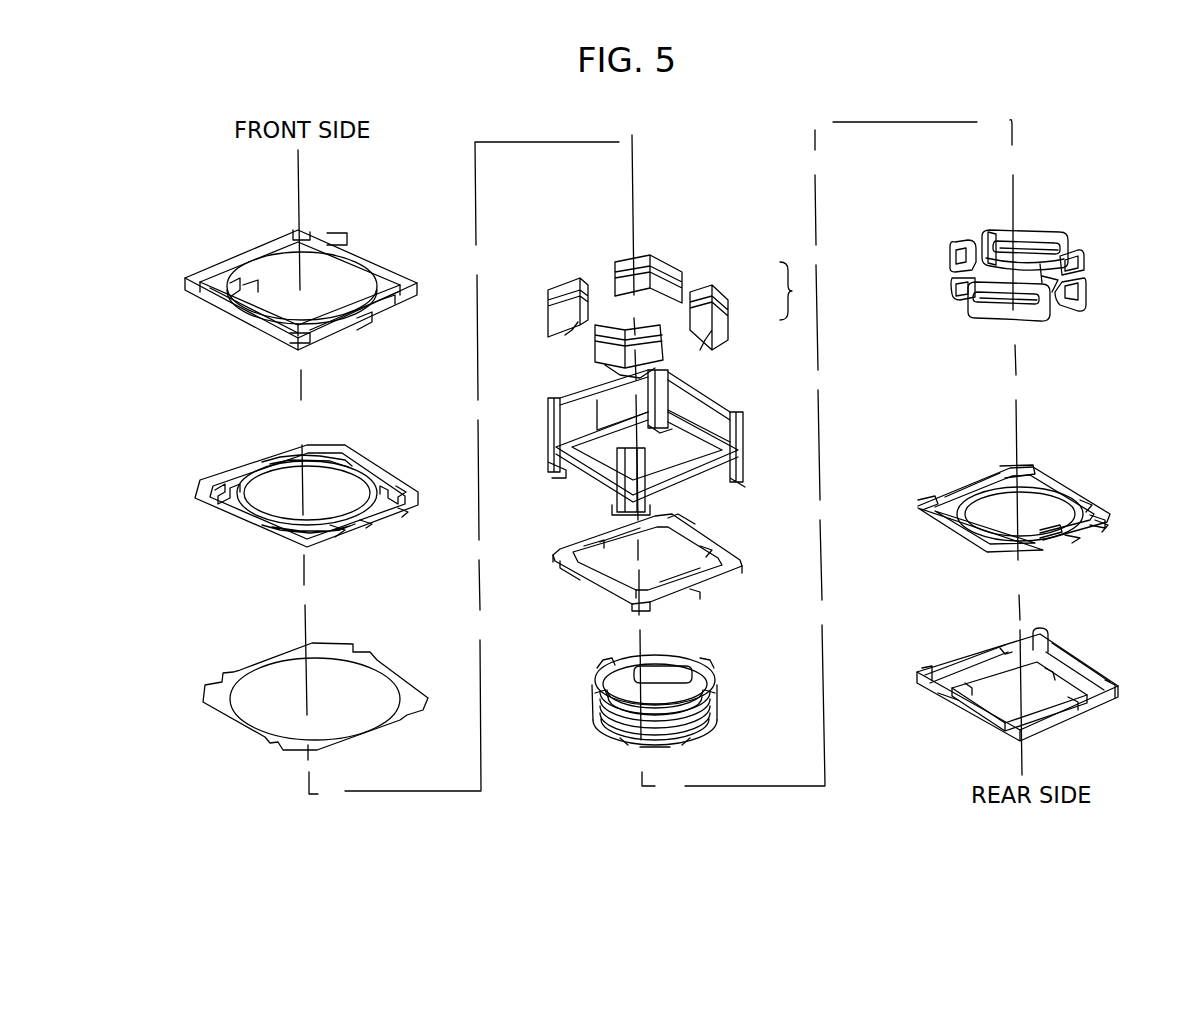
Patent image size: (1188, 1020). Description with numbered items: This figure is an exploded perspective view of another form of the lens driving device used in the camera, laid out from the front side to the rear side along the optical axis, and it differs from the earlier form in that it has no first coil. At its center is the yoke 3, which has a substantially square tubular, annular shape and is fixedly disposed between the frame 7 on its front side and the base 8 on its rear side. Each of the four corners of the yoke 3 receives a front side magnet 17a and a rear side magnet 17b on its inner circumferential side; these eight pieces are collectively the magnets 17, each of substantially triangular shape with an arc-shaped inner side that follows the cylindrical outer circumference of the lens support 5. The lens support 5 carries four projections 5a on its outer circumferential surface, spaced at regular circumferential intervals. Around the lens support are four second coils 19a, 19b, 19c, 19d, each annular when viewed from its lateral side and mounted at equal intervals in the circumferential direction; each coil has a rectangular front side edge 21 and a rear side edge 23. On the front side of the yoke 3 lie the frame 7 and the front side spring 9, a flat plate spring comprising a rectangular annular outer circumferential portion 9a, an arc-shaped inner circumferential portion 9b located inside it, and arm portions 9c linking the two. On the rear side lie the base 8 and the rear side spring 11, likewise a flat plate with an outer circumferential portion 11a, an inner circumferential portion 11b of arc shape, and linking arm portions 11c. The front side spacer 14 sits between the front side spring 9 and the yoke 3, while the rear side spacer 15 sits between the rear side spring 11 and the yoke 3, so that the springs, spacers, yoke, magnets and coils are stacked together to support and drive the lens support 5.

The yoke 3 is at (593, 473).
The lens support 5 is at (612, 738).
The projection 5a is at (687, 672).
The frame 7 is at (218, 303).
The base 8 is at (977, 718).
The front side spring 9 is at (223, 534).
The outer circumferential portion 9a is at (337, 538).
The inner circumferential portion 9b is at (367, 523).
The arm portion 9c is at (403, 512).
The rear side spring 11 is at (960, 547).
The outer circumferential portion 11a is at (1105, 530).
The inner circumferential portion 11b is at (1075, 538).
The arm portion 11c is at (1088, 505).
The front side spacer 14 is at (238, 722).
The rear side spacer 15 is at (578, 572).
The magnets 17 is at (682, 316).
The front side magnet 17a is at (707, 302).
The rear side magnet 17b is at (733, 333).
The second coil 19a is at (1042, 238).
The second coil 19b is at (945, 275).
The second coil 19c is at (1000, 320).
The second coil 19d is at (1080, 300).
The front side edge 21 is at (1005, 234).
The rear side edge 23 is at (1055, 315).